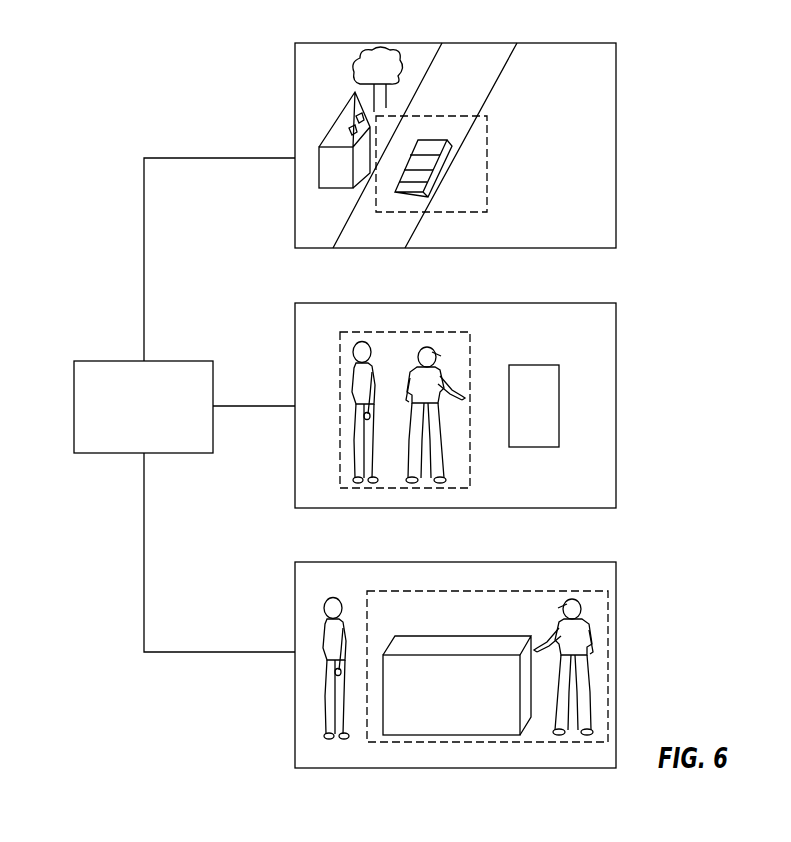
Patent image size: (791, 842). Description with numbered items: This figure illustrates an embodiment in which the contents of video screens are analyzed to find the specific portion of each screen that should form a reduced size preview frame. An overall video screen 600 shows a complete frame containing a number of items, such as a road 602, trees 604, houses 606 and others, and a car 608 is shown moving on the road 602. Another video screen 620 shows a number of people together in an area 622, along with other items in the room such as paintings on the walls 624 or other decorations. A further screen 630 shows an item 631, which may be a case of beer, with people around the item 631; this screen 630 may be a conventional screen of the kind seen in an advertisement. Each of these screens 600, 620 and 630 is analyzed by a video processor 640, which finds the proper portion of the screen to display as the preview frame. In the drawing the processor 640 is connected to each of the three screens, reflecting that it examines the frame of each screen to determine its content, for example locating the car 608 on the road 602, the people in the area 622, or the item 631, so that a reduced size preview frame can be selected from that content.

The video screen 600 is at (597, 43).
The road 602 is at (475, 86).
The trees 604 is at (373, 53).
The houses 606 is at (327, 163).
The car 608 is at (437, 163).
The video screen 620 is at (597, 303).
The area 622 is at (470, 343).
The paintings on the walls 624 is at (542, 365).
The screen 630 is at (597, 562).
The item 631 is at (450, 636).
The video processor 640 is at (100, 361).